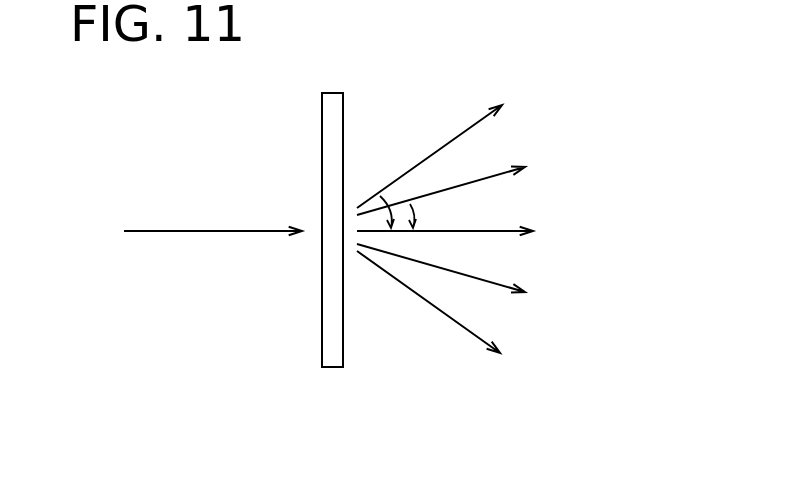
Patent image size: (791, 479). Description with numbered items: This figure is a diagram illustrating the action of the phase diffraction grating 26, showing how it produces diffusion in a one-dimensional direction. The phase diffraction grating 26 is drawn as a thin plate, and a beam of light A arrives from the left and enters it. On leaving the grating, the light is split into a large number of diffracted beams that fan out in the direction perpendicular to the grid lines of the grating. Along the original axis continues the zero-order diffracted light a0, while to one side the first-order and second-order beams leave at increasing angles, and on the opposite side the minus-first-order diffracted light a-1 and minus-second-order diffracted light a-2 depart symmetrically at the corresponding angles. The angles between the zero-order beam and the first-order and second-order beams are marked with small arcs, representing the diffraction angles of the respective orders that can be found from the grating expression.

The phase diffraction grating 26 is at (322, 148).
The beam of light A is at (213, 231).
The 0-order diffracted light a0 is at (475, 232).
The −1-order diffracted light a-1 is at (480, 283).
The −2-order diffracted light a-2 is at (460, 325).